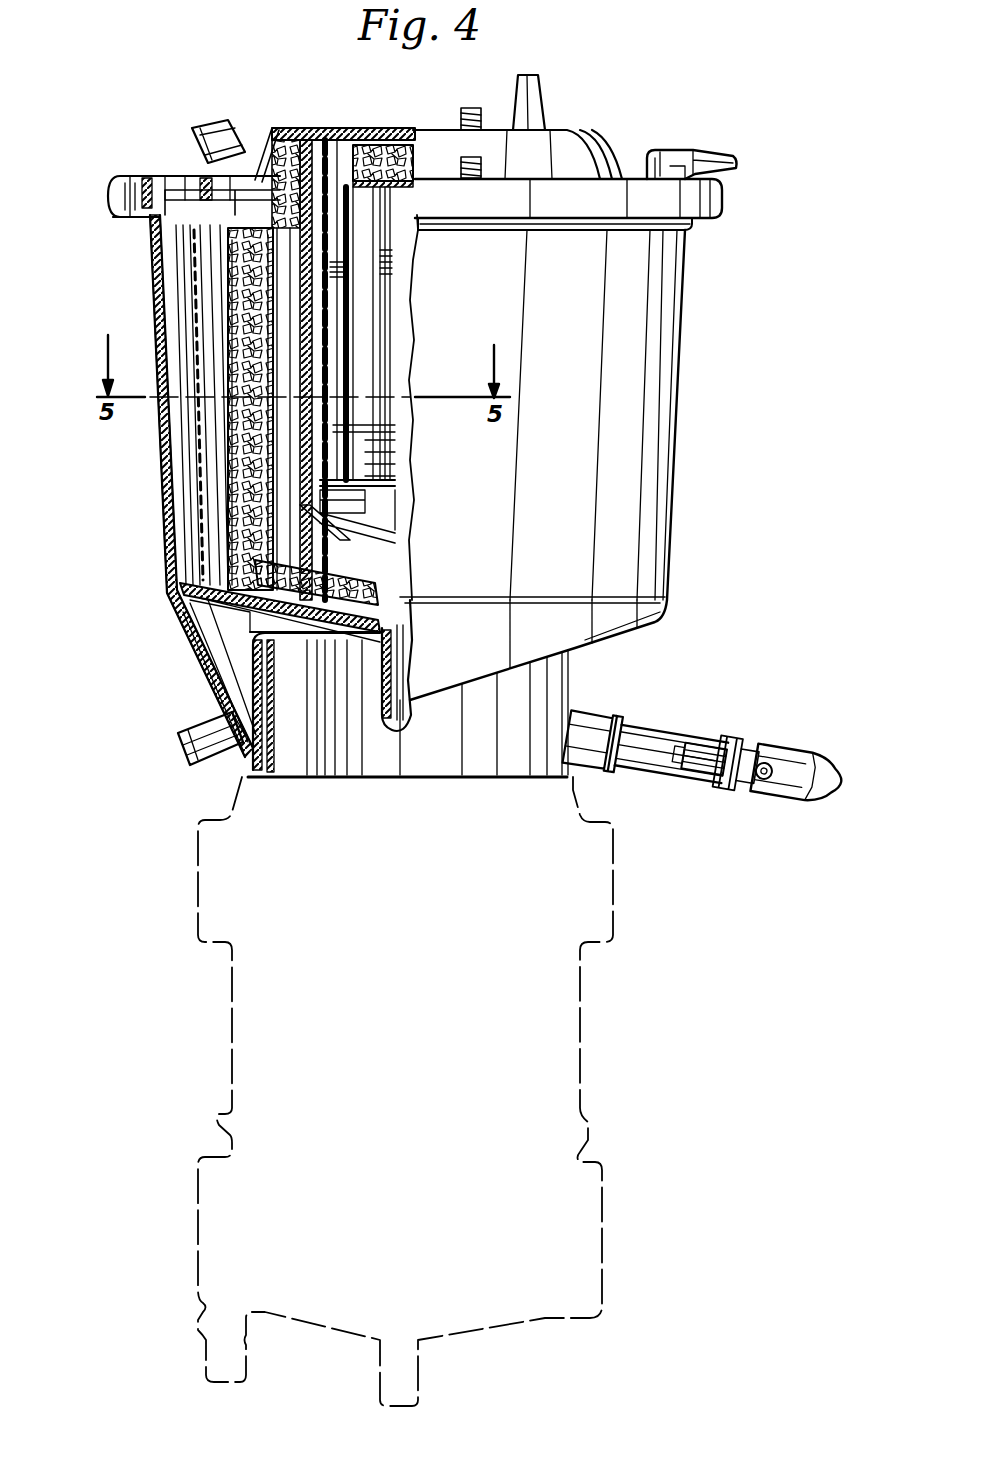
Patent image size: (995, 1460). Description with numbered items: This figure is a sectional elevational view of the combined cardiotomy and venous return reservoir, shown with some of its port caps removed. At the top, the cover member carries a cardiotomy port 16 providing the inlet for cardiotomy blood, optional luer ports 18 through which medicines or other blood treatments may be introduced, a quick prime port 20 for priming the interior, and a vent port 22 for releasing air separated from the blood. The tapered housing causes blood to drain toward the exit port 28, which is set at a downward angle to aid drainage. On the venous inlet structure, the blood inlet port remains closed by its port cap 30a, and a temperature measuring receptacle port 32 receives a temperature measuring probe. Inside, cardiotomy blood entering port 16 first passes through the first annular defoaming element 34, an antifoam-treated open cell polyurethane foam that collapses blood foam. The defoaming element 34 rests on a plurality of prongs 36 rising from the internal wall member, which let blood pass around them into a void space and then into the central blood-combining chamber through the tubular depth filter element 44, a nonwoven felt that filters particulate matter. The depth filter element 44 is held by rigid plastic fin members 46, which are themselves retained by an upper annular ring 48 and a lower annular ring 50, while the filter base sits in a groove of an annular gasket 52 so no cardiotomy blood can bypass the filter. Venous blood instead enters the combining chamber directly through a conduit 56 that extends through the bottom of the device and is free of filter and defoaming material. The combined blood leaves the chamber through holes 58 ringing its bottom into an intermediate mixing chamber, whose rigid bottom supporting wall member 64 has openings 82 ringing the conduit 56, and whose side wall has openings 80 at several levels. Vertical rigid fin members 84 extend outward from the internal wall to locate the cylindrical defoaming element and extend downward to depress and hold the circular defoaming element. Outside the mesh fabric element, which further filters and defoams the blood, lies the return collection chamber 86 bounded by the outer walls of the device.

The cardiotomy port 16 is at (215, 125).
The luer ports 18 is at (458, 175).
The quick prime port 20 is at (540, 84).
The vent port 22 is at (700, 150).
The exit port 28 is at (188, 743).
The port cap 30a is at (793, 750).
The temperature measuring receptacle port 32 is at (735, 795).
The first annular defoaming element 34 is at (240, 170).
The prongs 36 is at (275, 145).
The tubular depth filter element 44 is at (330, 255).
The rigid plastic fin members 46 is at (333, 425).
The upper annular ring 48 is at (347, 140).
The lower annular ring 50 is at (380, 485).
The annular gasket 52 is at (365, 500).
The conduit 56 is at (378, 685).
The holes 58 is at (365, 540).
The rigid bottom supporting wall member 64 is at (203, 603).
The openings 80 is at (200, 292).
The openings 82 is at (340, 585).
The vertical rigid fin members 84 is at (237, 455).
The return collection chamber 86 is at (178, 622).